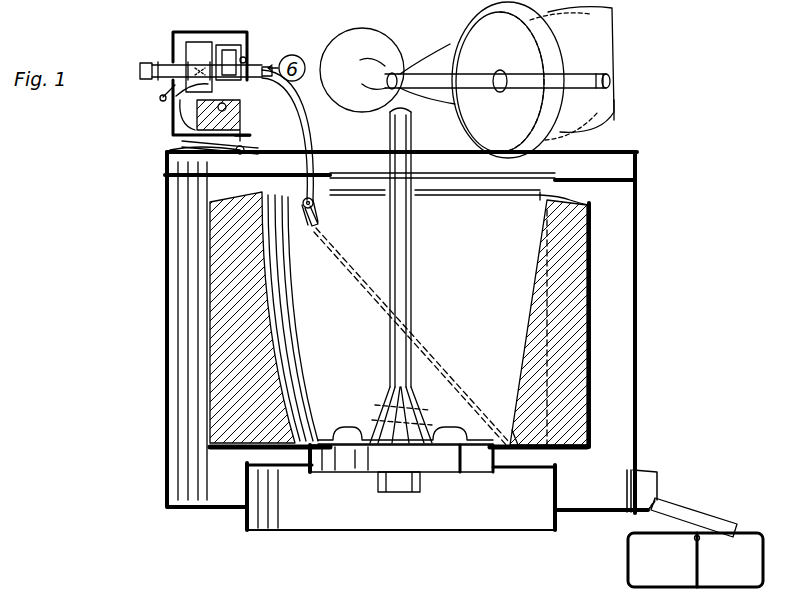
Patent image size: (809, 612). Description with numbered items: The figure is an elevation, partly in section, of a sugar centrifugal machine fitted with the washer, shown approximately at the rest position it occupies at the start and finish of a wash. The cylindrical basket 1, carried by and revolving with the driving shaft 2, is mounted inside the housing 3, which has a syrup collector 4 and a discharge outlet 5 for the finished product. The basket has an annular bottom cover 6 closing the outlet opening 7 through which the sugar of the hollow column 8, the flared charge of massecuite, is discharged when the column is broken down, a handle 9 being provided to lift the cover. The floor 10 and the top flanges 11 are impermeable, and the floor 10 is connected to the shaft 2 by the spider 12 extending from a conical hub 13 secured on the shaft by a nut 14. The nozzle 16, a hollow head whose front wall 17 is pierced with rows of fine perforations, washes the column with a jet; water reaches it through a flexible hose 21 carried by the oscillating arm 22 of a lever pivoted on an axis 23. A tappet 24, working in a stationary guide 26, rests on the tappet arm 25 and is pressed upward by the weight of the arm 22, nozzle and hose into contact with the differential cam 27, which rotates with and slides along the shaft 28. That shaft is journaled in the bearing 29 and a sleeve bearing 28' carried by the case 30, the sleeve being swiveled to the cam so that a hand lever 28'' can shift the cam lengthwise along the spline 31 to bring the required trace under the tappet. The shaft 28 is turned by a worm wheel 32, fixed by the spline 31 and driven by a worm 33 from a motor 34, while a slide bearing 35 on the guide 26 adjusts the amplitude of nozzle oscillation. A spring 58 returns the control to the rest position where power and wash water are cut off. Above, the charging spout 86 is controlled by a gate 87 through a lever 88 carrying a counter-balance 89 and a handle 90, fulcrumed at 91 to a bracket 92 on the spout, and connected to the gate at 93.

The cylindrical basket 1 is at (592, 305).
The driving shaft 2 is at (413, 215).
The housing 3 is at (640, 352).
The syrup collector 4 is at (605, 478).
The discharge outlet 5 is at (447, 496).
The annular bottom cover 6 is at (313, 415).
The outlet opening 7 is at (401, 458).
The hollow column 8 is at (290, 322).
The handle 9 is at (350, 425).
The floor 10 is at (521, 437).
The top flanges 11 is at (546, 203).
The spider 12 is at (352, 472).
The conical hub 13 is at (420, 405).
The nut 14 is at (418, 486).
The nozzle 16 is at (302, 218).
The front wall 17 is at (320, 224).
The flexible hose 21 is at (314, 130).
The oscillating arm 22 is at (300, 206).
The axis 23 is at (210, 160).
The tappet 24 is at (160, 96).
The tappet arm 25 is at (200, 155).
The stationary guide 26 is at (190, 125).
The differential cam 27 is at (192, 50).
The shaft 28 is at (236, 84).
The bearing 28' is at (154, 57).
The hand lever 28'' is at (126, 65).
The bearing 29 is at (272, 70).
The case 30 is at (248, 40).
The spline 31 is at (225, 45).
The worm wheel 32 is at (236, 45).
The worm 33 is at (240, 115).
The motor 34 is at (176, 118).
The slide bearing 35 is at (250, 145).
The spring 58 is at (250, 55).
The charging spout 86 is at (572, 73).
The gate 87 is at (508, 80).
The lever 88 is at (580, 78).
The counter-balance 89 is at (392, 34).
The handle 90 is at (612, 122).
The fulcrum 91 is at (398, 76).
The bracket 92 is at (448, 60).
The connection 93 is at (500, 68).